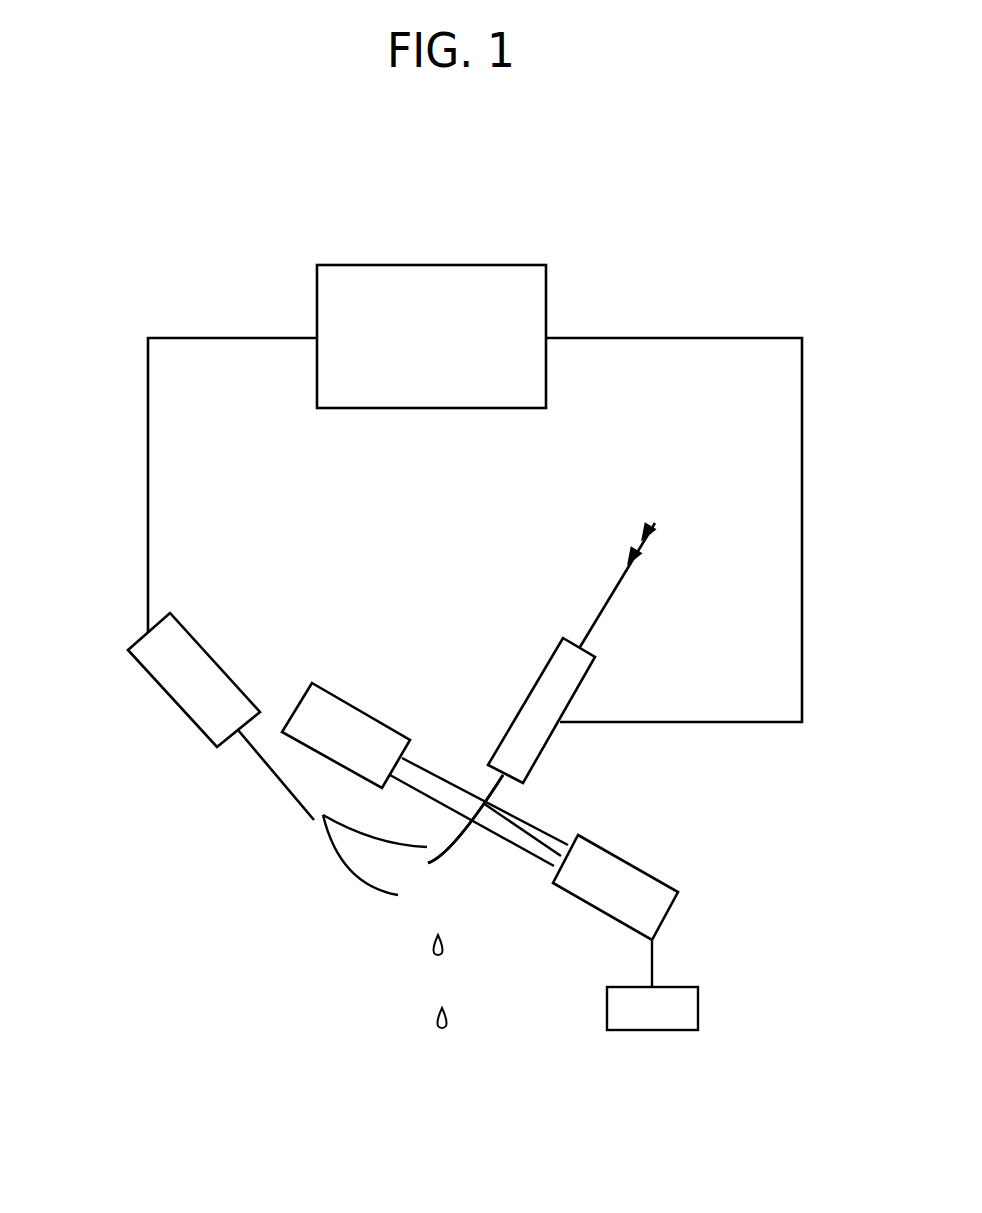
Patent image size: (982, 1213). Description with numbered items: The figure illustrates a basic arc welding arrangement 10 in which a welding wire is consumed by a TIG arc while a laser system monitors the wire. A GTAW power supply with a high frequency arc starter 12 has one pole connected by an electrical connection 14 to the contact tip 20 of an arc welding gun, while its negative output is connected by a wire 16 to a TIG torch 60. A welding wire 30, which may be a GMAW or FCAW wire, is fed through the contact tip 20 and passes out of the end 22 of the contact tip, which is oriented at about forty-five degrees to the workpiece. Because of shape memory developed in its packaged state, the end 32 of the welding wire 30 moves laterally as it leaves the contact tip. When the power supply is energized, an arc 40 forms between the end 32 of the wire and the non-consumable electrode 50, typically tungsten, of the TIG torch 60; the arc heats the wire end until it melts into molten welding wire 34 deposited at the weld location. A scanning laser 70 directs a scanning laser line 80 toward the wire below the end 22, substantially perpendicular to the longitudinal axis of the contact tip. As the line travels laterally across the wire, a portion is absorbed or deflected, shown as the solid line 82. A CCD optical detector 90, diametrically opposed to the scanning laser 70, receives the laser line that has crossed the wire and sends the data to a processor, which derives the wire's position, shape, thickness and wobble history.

The arc welding arrangement 10 is at (665, 253).
The GTAW power supply with high frequency arc starter 12 is at (357, 265).
The electrical connection 14 is at (803, 440).
The wire 16 is at (147, 455).
The contact tip 20 is at (550, 682).
The end of contact tip 22 is at (535, 760).
The welding wire 30 is at (598, 615).
The end of welding wire 32 is at (428, 863).
The molten welding wire 34 is at (437, 1018).
The arc 40 is at (347, 852).
The non-consumable electrode 50 is at (298, 800).
The TIG torch 60 is at (212, 680).
The scanning laser 70 is at (355, 730).
The scanning laser line 80 is at (445, 790).
The deflected portion of laser 82 is at (547, 845).
The CCD optical detector 90 is at (623, 873).